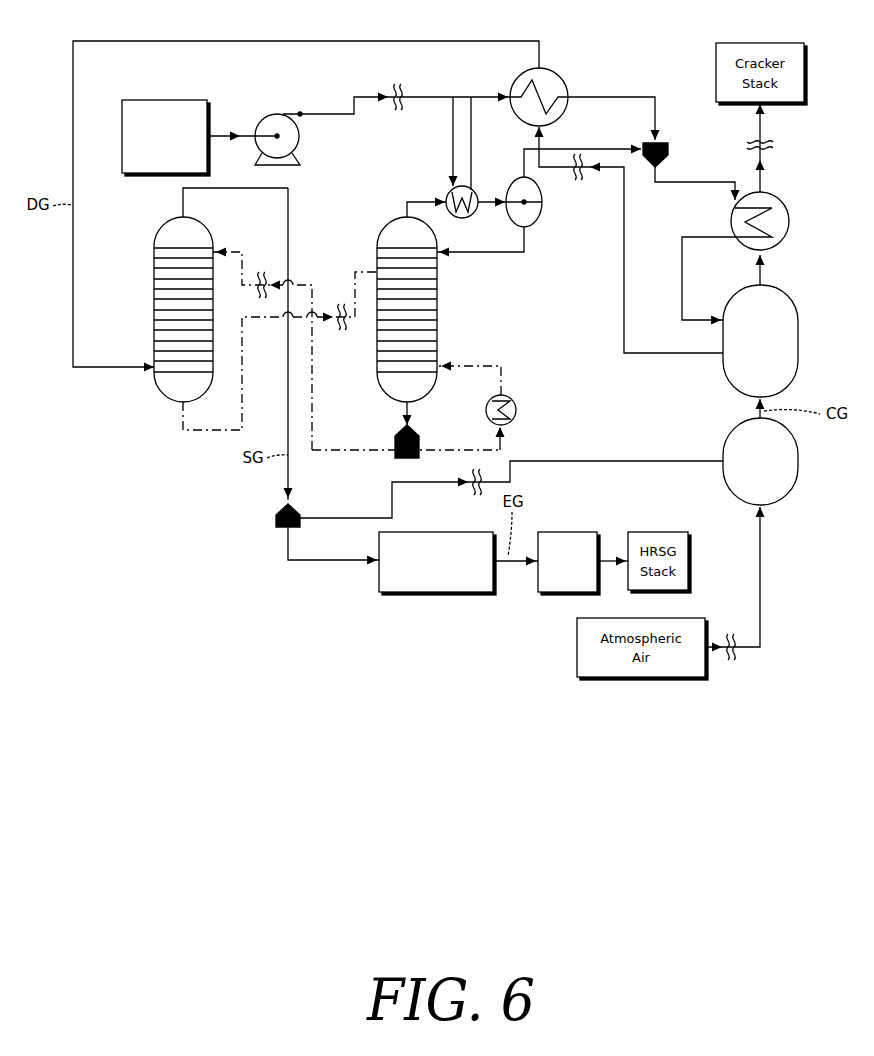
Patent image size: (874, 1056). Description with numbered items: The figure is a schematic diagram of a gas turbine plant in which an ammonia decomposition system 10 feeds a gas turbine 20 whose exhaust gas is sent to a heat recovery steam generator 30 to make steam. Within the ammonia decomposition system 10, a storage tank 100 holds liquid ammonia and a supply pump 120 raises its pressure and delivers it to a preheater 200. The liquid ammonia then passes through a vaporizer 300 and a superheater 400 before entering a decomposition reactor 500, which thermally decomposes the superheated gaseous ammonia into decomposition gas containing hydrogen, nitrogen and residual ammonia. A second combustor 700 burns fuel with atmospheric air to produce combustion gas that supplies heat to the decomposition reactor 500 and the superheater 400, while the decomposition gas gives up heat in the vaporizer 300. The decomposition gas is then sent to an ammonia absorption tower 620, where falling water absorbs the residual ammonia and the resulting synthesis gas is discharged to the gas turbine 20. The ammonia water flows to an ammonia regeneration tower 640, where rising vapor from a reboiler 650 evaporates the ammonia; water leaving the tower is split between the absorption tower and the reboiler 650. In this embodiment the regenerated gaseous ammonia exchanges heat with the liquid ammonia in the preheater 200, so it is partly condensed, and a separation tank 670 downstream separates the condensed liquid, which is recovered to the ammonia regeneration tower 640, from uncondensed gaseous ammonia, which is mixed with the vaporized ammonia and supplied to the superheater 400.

The ammonia decomposition system 10 is at (796, 180).
The gas turbine 20 is at (431, 532).
The heat recovery steam generator 30 is at (565, 532).
The storage tank 100 is at (165, 100).
The supply pump 120 is at (277, 114).
The preheater 200 is at (470, 218).
The vaporizer 300 is at (562, 78).
The superheater 400 is at (790, 222).
The decomposition reactor 500 is at (798, 340).
The ammonia absorption tower 620 is at (155, 260).
The ammonia regeneration tower 640 is at (385, 262).
The reboiler 650 is at (486, 412).
The separation tank 670 is at (533, 222).
The second combustor 700 is at (798, 460).